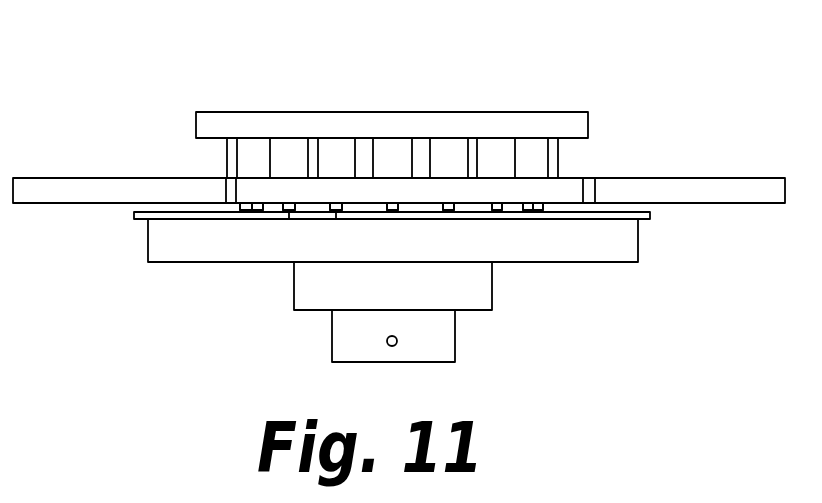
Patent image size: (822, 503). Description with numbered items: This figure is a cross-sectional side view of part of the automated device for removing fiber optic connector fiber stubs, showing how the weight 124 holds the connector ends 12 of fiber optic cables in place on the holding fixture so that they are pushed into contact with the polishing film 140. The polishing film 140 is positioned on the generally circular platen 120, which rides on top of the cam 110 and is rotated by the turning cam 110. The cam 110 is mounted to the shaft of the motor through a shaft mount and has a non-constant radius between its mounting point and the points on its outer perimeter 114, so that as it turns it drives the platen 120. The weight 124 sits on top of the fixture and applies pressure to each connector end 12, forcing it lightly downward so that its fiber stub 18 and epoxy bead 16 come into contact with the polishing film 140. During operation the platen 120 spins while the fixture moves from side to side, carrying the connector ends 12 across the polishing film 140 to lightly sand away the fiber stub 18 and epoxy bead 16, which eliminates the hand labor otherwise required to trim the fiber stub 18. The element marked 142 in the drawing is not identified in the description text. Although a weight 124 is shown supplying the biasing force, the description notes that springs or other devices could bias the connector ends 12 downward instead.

The cam 110 is at (399, 221).
The weight 124 is at (440, 120).
The connector end 12 is at (530, 157).
The platen 120 is at (708, 177).
The polishing film 140 is at (650, 216).
The fiber stub 18 is at (336, 219).
The epoxy bead 16 is at (391, 206).
The outer perimeter 114 is at (303, 285).
The base block 142 is at (343, 336).